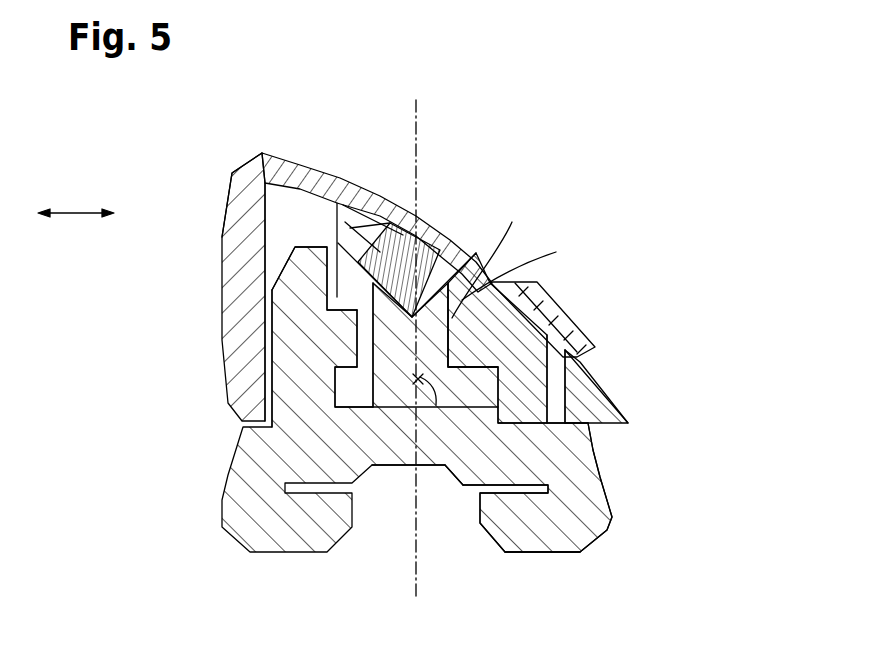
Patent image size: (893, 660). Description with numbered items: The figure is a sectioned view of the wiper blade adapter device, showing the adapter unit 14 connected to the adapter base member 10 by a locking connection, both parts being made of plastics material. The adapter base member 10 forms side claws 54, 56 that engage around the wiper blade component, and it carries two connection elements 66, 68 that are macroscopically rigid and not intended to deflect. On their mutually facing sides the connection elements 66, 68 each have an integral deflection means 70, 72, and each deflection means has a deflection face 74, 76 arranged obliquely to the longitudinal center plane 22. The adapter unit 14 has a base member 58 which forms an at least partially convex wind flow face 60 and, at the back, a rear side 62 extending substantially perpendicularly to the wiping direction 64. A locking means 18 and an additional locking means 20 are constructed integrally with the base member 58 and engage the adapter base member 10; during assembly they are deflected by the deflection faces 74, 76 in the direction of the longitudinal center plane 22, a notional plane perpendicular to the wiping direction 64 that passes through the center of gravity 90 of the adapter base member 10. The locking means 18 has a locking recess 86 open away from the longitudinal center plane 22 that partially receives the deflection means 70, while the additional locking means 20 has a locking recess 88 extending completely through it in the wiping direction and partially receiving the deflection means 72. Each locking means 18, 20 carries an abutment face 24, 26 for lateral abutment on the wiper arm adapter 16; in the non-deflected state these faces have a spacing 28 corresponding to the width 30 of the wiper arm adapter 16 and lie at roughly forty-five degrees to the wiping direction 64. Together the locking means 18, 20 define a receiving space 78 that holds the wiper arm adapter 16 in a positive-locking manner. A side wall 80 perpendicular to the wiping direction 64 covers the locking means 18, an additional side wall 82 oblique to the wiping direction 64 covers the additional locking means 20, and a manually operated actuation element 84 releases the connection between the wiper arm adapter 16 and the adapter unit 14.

The adapter base member 10 is at (573, 553).
The adapter unit 14 is at (208, 203).
The wiper arm adapter 16 is at (360, 262).
The locking means 18 is at (381, 467).
The additional locking means 20 is at (540, 451).
The longitudinal center plane 22 is at (416, 594).
The abutment face 24 is at (388, 250).
The abutment face 26 is at (452, 262).
The spacing 28 is at (428, 262).
The width 30 is at (428, 262).
The side claw 54 is at (600, 521).
The side claw 56 is at (255, 521).
The base member 58 is at (251, 149).
The wind flow face 60 is at (490, 275).
The rear side 62 is at (220, 268).
The wiping direction 64 is at (72, 212).
The connection element 66 is at (340, 287).
The connection element 68 is at (565, 377).
The deflection means 70 is at (330, 392).
The deflection means 72 is at (520, 272).
The deflection face 74 is at (305, 318).
The deflection face 76 is at (482, 250).
The receiving space 78 is at (462, 472).
The side wall 80 is at (332, 413).
The additional side wall 82 is at (620, 404).
The actuation element 84 is at (577, 323).
The locking recess 86 is at (352, 355).
The locking recess 88 is at (530, 300).
The center of gravity 90 is at (436, 407).